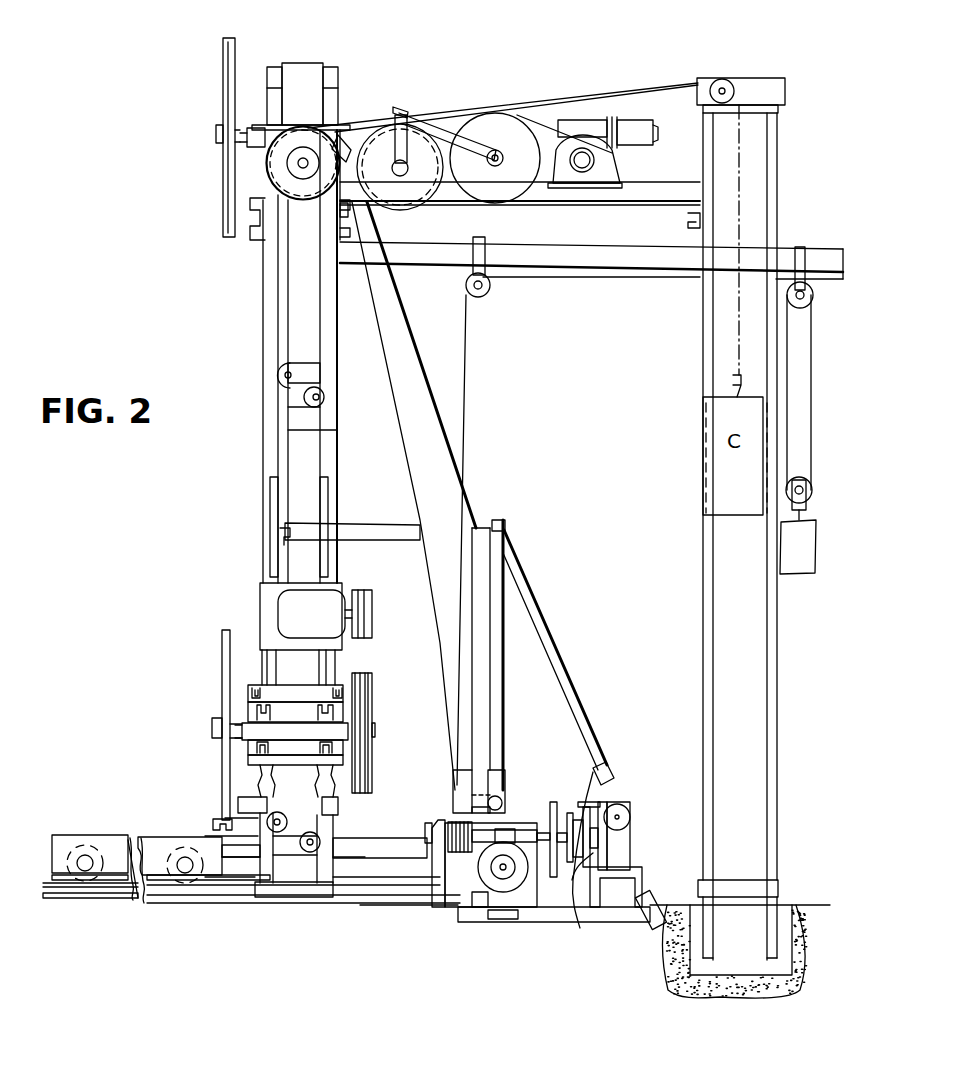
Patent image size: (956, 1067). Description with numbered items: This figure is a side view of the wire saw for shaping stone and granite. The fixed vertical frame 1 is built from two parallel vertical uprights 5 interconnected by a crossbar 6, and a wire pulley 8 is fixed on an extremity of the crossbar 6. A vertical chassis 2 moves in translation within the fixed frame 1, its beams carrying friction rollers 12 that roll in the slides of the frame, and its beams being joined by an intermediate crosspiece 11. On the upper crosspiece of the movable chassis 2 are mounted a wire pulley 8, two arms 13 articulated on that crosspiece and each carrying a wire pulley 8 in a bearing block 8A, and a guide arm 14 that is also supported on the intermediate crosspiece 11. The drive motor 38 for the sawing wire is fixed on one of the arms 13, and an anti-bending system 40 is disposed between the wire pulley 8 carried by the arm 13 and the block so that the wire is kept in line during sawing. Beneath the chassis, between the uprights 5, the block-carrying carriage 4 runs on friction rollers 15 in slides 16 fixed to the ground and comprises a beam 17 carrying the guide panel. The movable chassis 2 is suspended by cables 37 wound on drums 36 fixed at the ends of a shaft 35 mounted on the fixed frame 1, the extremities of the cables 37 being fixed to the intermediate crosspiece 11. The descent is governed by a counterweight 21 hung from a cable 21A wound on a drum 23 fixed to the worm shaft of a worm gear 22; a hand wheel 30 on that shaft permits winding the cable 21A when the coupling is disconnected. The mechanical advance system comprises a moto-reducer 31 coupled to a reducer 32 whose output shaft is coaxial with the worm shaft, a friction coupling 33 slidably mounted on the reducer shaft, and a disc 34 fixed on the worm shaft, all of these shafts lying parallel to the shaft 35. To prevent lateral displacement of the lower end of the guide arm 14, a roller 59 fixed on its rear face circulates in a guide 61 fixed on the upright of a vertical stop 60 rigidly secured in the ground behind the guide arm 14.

The fixed vertical frame 1 is at (270, 313).
The vertical chassis 2 is at (308, 376).
The block-carrying carriage 4 is at (112, 836).
The vertical uprights 5 is at (322, 862).
The crossbar 6 is at (261, 240).
The wire pulley 8 is at (228, 58).
The bearing block 8A is at (253, 733).
The intermediate crosspiece 11 is at (286, 525).
The friction rollers 12 is at (304, 396).
The arms 13 is at (318, 551).
The guide arm 14 is at (397, 323).
The friction rollers 15 is at (84, 878).
The slides 16 is at (118, 892).
The beam 17 is at (382, 855).
The counterweight 21 is at (803, 566).
The cable 21A is at (468, 384).
The worm gear 22 is at (515, 878).
The drum 23 is at (440, 826).
The hand wheel 30 is at (557, 808).
The moto-reducer 31 is at (600, 761).
The reducer 32 is at (623, 815).
The friction coupling 33 is at (636, 884).
The disc 34 is at (505, 862).
The shaft 35 is at (306, 160).
The drums 36 is at (297, 147).
The cables 37 is at (291, 430).
The drive motor 38 is at (330, 612).
The anti-bending system 40 is at (207, 819).
The roller 59 is at (500, 798).
The vertical stop 60 is at (483, 613).
The guide 61 is at (504, 533).